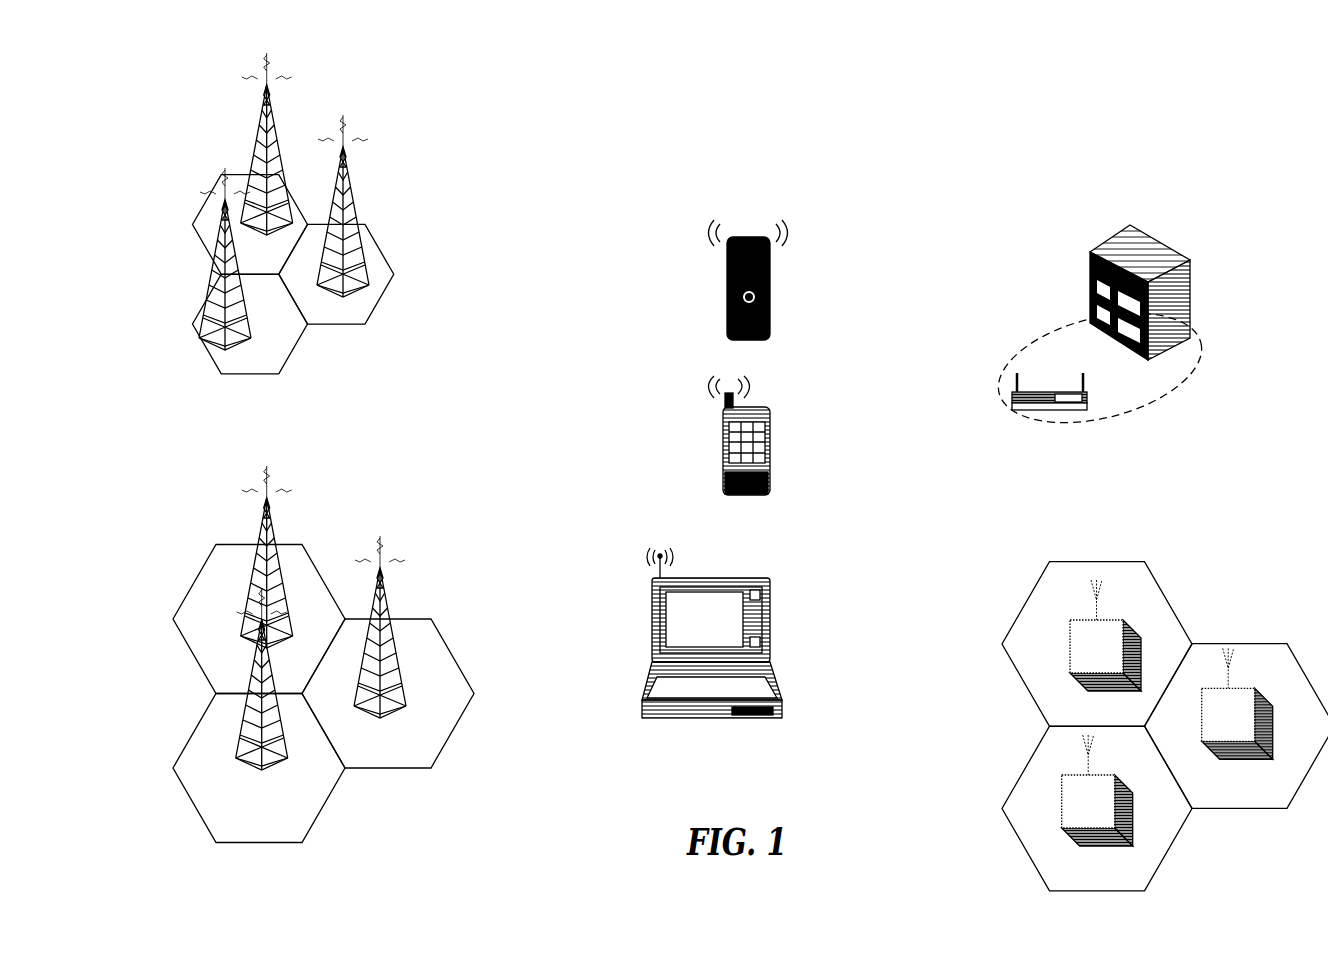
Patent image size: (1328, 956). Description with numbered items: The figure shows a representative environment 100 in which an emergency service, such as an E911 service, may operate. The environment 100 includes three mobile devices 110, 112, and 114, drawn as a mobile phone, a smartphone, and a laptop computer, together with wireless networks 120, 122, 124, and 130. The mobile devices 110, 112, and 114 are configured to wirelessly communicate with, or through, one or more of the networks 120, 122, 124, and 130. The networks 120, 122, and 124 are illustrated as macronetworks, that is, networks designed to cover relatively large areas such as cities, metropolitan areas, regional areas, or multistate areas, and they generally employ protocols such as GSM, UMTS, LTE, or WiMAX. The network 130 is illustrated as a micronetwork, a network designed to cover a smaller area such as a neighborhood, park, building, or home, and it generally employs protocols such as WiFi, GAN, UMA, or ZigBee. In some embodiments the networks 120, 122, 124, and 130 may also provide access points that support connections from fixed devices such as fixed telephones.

The environment 100 is at (1020, 154).
The mobile device 110 is at (768, 287).
The mobile device 112 is at (768, 408).
The mobile device 114 is at (762, 578).
The wireless network 120 is at (362, 174).
The wireless network 122 is at (329, 543).
The wireless network 124 is at (1209, 624).
The wireless network 130 is at (1100, 333).